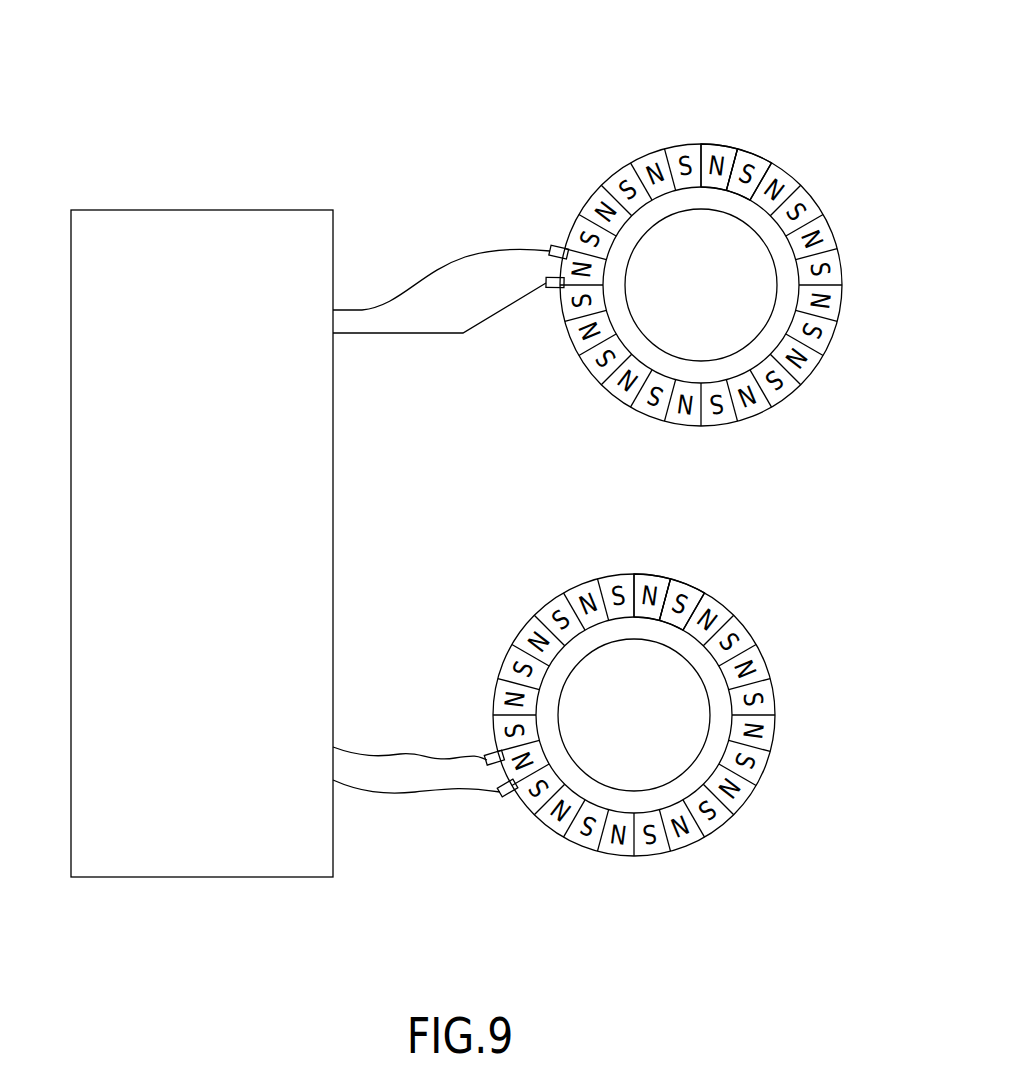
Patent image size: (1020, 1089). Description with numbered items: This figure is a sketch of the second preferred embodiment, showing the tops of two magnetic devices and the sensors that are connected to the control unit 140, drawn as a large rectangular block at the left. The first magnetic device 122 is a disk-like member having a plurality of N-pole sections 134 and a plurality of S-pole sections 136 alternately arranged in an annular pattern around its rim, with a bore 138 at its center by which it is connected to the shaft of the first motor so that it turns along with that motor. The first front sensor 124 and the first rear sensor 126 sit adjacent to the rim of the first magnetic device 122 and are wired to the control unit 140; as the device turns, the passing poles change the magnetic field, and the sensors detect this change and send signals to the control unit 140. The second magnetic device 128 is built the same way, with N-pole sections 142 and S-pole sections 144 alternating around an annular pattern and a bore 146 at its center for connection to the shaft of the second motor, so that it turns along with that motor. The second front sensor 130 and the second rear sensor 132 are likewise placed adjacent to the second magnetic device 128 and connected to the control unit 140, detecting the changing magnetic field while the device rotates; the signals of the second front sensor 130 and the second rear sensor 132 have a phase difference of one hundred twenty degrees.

The first magnetic device 122 is at (681, 125).
The first front sensor 124 is at (557, 247).
The first rear sensor 126 is at (555, 290).
The second magnetic device 128 is at (618, 556).
The second front sensor 130 is at (487, 757).
The second rear sensor 132 is at (504, 796).
The N-pole sections 134 is at (718, 152).
The S-pole sections 136 is at (758, 167).
The bore 138 is at (738, 330).
The control unit 140 is at (207, 210).
The N-pole sections 142 is at (652, 583).
The S-pole sections 144 is at (695, 597).
The bore 146 is at (650, 743).